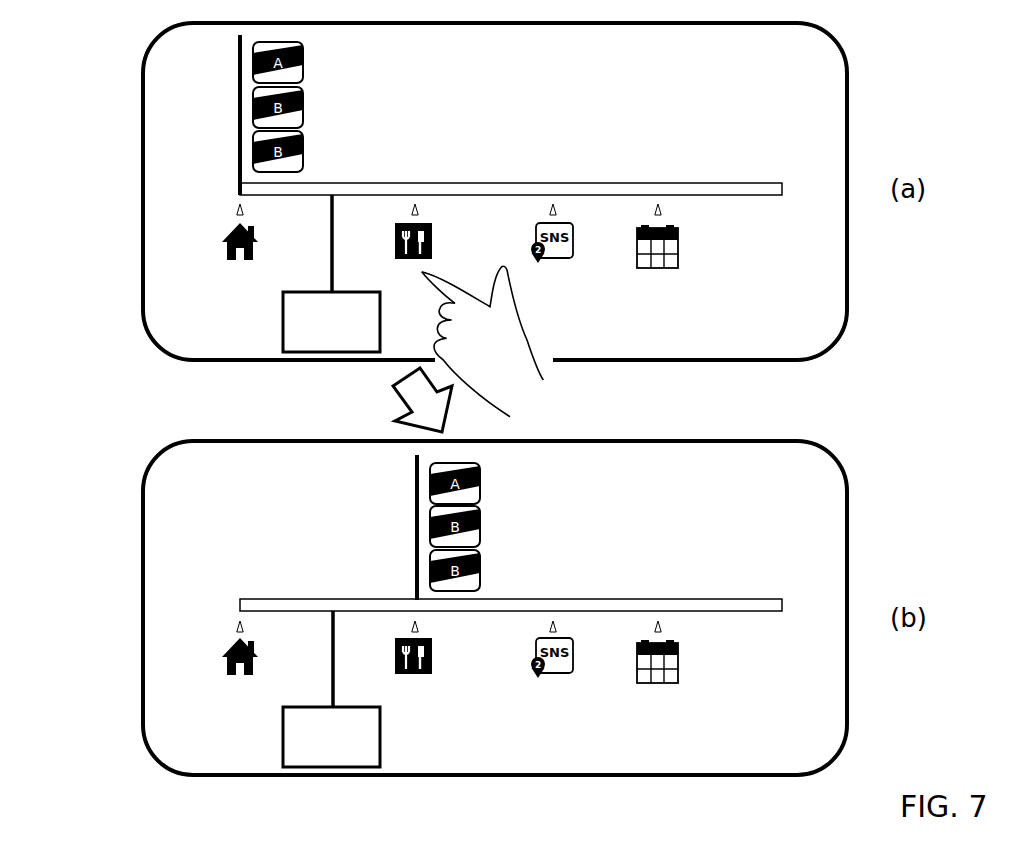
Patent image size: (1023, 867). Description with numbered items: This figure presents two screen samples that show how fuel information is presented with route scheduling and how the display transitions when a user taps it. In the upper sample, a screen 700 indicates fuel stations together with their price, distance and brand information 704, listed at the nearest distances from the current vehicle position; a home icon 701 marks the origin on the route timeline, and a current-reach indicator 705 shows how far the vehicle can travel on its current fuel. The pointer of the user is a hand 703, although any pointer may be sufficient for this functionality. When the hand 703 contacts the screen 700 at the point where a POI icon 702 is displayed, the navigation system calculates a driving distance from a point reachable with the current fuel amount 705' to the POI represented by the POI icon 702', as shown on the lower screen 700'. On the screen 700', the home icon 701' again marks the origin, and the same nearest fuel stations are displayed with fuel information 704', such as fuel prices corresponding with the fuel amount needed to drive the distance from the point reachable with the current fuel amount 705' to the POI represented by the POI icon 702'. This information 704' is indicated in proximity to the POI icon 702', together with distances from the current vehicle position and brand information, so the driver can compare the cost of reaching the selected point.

The screen 700 is at (465, 213).
The home (origin) icon 701 is at (238, 273).
The POI icon 702 is at (450, 255).
The hand 703 is at (528, 343).
The price, distance and brand information 704 is at (361, 108).
The current reach indicator box 705 is at (304, 294).
The screen 700' is at (470, 635).
The home (origin) icon 701' is at (237, 688).
The POI icon 702' is at (456, 670).
The price, distance and brand information 704' is at (564, 529).
The point reachable with the current fuel amount 705' is at (306, 710).